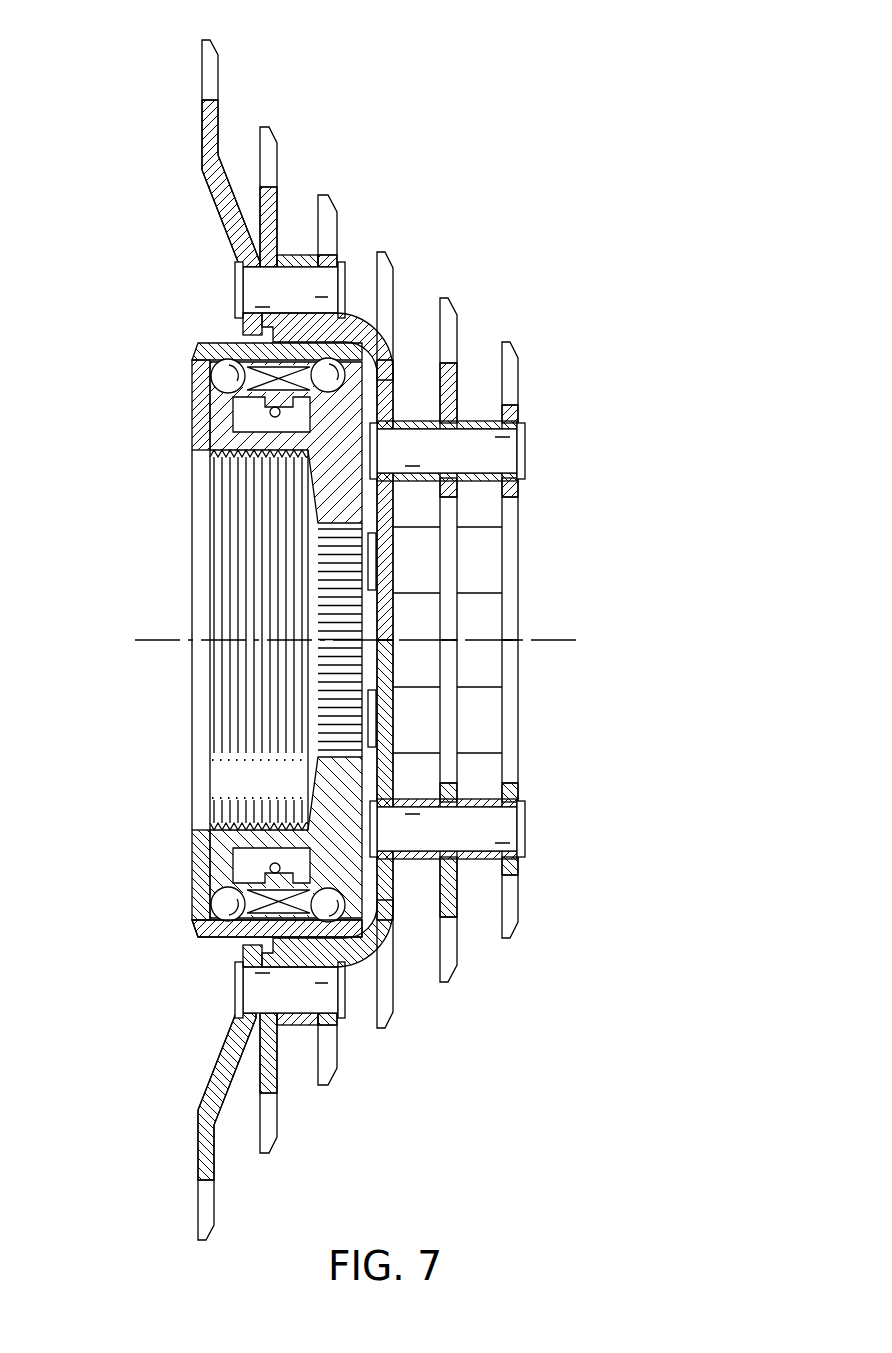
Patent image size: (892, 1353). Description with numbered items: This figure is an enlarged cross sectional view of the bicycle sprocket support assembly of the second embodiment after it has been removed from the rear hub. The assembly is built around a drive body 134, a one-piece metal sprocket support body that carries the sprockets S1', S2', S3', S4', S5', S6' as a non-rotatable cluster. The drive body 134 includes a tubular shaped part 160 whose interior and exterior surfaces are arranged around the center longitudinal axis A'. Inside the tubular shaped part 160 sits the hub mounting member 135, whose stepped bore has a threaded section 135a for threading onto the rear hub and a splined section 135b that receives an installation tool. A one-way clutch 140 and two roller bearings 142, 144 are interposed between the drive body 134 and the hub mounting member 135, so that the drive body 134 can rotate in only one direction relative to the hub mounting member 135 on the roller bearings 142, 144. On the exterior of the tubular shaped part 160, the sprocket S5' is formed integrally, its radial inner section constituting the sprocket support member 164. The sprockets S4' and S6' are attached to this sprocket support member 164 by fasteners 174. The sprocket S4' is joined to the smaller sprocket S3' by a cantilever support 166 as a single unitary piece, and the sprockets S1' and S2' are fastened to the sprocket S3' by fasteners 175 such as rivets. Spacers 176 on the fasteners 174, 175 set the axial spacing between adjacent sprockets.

The drive body 134 is at (218, 344).
The hub mounting member 135 is at (192, 407).
The threaded section 135a is at (237, 545).
The splined section 135b is at (332, 685).
The one-way clutch 140 is at (224, 423).
The roller bearing 142 is at (340, 373).
The roller bearing 144 is at (220, 378).
The tubular shaped part 160 is at (265, 920).
The sprocket support member 164 is at (267, 207).
The cantilever support 166 is at (352, 325).
The fasteners 174 is at (233, 300).
The fasteners 175 is at (527, 445).
The spacers 176 is at (293, 258).
The sprocket S1' is at (535, 474).
The sprocket S2' is at (473, 452).
The sprocket S3' is at (410, 430).
The sprocket S4' is at (351, 214).
The sprocket S5' is at (294, 180).
The sprocket S6' is at (235, 136).
The center longitudinal axis A' is at (376, 614).